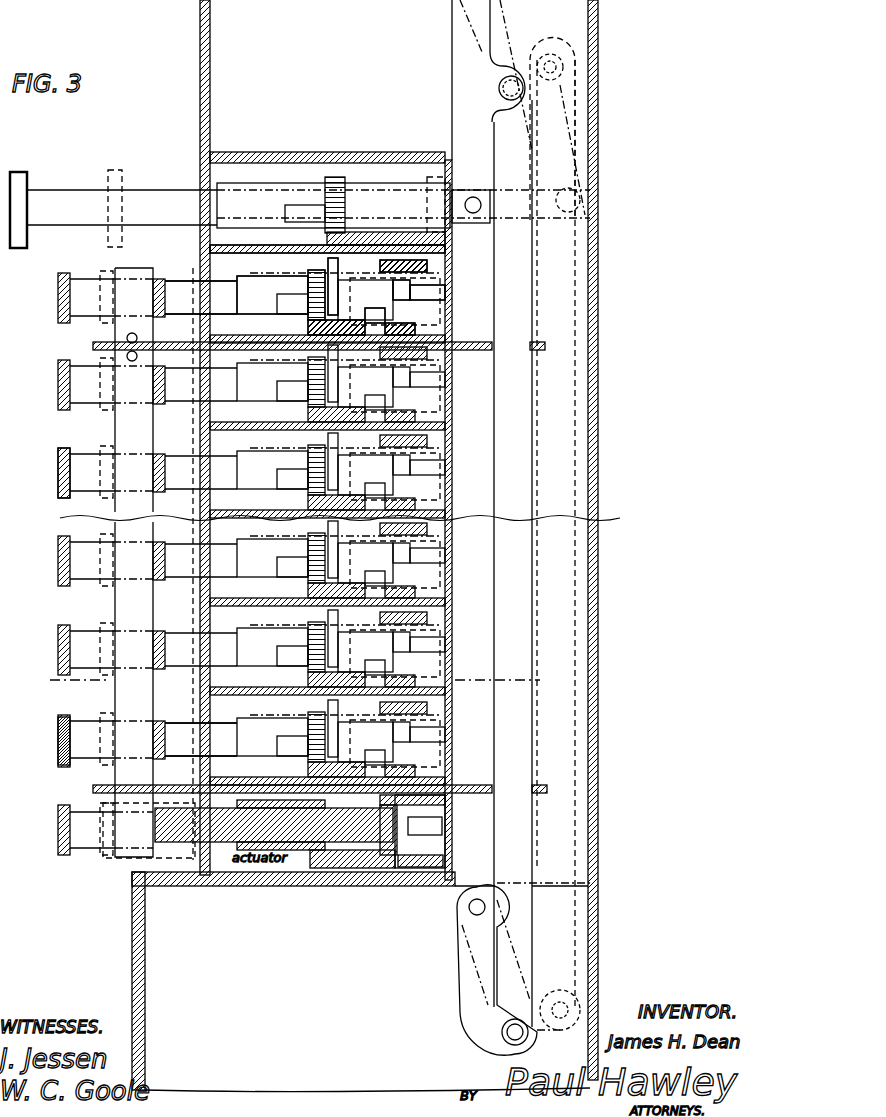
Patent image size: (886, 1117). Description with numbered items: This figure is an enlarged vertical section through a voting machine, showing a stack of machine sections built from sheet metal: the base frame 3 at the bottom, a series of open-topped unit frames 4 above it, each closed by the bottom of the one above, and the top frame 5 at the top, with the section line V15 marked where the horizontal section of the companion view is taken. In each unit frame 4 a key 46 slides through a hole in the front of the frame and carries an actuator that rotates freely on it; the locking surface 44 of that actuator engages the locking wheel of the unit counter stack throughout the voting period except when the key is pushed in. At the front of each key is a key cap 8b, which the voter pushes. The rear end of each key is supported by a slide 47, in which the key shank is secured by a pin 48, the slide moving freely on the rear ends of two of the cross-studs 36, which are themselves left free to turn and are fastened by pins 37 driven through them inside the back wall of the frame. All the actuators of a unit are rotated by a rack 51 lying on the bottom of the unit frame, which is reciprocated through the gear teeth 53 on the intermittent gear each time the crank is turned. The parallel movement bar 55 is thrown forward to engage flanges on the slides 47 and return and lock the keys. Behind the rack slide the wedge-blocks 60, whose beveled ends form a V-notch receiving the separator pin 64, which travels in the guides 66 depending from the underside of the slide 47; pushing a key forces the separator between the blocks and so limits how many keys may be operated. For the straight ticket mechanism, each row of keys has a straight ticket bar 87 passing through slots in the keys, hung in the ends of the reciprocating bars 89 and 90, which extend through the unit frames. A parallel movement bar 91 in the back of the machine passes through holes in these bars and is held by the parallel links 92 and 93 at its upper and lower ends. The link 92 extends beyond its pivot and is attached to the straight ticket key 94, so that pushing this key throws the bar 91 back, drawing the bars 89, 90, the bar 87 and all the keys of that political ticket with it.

The base frame 3 is at (145, 968).
The unit frame 4 is at (210, 266).
The top frame 5 is at (210, 97).
The key caps 8b is at (93, 723).
The cross-stud 36 is at (425, 292).
The pin 37 is at (445, 812).
The locking surface of the actuator 44 is at (272, 295).
The key 46 is at (274, 562).
The slide 47 is at (342, 286).
The pin 48 is at (420, 854).
The rack 51 is at (305, 322).
The gear teeth 53 is at (380, 266).
The parallel movement bar 55 is at (447, 258).
The wedge-block 60 is at (396, 890).
The separator pin 64 is at (410, 327).
The guide 66 is at (385, 313).
The straight ticket bar 87 is at (149, 564).
The reciprocating bar 89 is at (93, 345).
The reciprocating bar 90 is at (93, 790).
The parallel movement bar 91 is at (534, 543).
The parallel link 92 is at (518, 110).
The parallel link 93 is at (523, 969).
The straight ticket key 94 is at (300, 209).
The section line v15—v15 V15 is at (289, 679).